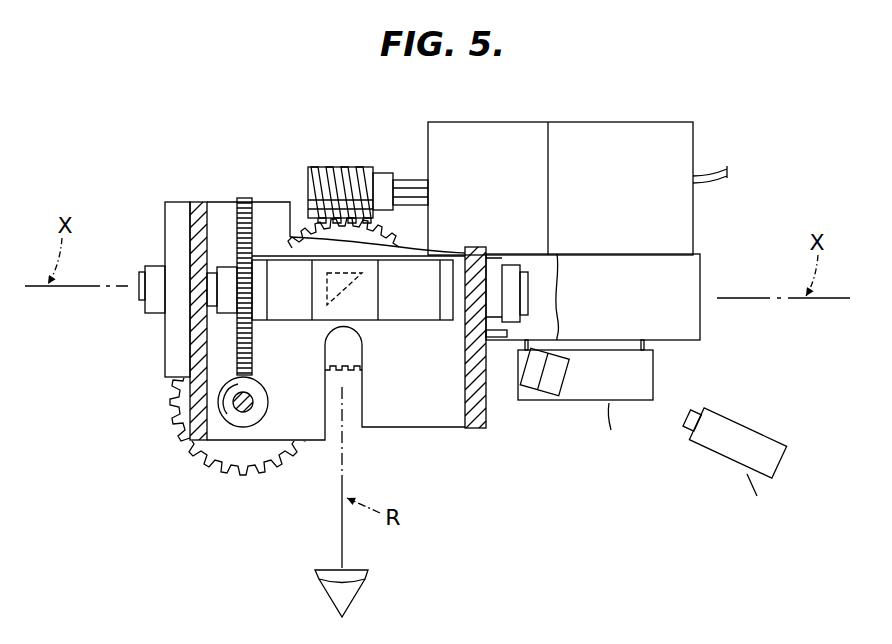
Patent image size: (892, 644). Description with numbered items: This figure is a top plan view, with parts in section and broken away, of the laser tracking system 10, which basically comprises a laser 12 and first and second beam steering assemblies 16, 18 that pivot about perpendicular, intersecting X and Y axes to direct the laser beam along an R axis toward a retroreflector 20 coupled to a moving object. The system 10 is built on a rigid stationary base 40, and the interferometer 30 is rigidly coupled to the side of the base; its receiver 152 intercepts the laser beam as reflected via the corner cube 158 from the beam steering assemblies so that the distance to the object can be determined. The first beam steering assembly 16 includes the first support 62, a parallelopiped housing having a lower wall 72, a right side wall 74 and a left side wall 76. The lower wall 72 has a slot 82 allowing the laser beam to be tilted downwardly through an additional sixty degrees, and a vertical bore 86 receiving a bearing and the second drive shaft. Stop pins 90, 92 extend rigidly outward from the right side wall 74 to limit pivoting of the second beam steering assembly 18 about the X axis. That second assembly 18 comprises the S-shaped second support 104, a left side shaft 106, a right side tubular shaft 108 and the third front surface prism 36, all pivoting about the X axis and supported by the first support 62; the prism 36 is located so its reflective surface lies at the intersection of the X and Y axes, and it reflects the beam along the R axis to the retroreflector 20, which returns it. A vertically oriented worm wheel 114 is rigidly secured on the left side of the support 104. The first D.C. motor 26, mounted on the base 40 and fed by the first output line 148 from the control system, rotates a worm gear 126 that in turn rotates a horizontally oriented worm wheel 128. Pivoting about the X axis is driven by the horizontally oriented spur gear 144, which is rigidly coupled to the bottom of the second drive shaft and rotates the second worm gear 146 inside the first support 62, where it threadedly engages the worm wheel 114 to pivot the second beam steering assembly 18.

The system 10 is at (738, 135).
The laser 12 is at (745, 423).
The first beam steering assembly 16 is at (372, 372).
The second beam steering assembly 18 is at (278, 232).
The retroreflector 20 is at (361, 588).
The first D.C. motor 26 is at (650, 122).
The interferometer 30 is at (615, 415).
The third front surface prism 36 is at (327, 305).
The rigid stationary base 40 is at (703, 261).
The first support 62 is at (436, 430).
The lower wall 72 is at (286, 433).
The right side wall 74 is at (489, 412).
The left side wall 76 is at (177, 402).
The slot 82 is at (357, 423).
The vertical bore 86 is at (268, 401).
The stop pin 90 is at (516, 263).
The stop pin 92 is at (508, 333).
The second S-shaped support 104 is at (401, 323).
The left side shaft 106 is at (136, 302).
The right side tubular shaft 108 is at (532, 265).
The worm wheel 114 is at (243, 198).
The worm gear 126 is at (333, 167).
The worm wheel 128 is at (398, 235).
The second spur gear 144 is at (189, 449).
The second worm gear 146 is at (241, 428).
The first output line 148 is at (714, 184).
The receiver 152 is at (654, 377).
The corner cube 158 is at (570, 355).